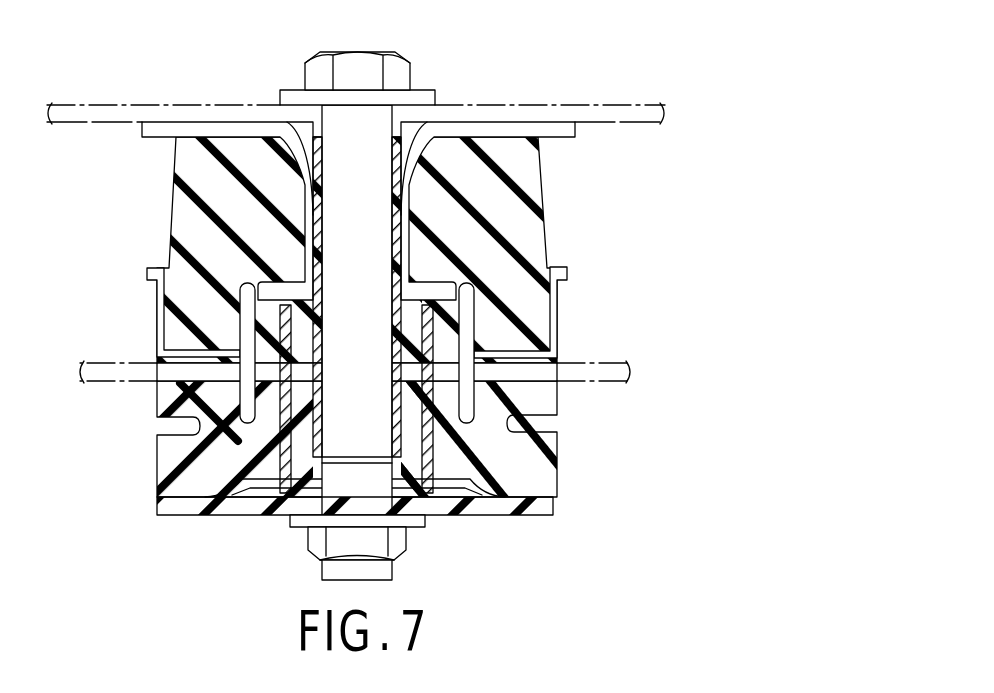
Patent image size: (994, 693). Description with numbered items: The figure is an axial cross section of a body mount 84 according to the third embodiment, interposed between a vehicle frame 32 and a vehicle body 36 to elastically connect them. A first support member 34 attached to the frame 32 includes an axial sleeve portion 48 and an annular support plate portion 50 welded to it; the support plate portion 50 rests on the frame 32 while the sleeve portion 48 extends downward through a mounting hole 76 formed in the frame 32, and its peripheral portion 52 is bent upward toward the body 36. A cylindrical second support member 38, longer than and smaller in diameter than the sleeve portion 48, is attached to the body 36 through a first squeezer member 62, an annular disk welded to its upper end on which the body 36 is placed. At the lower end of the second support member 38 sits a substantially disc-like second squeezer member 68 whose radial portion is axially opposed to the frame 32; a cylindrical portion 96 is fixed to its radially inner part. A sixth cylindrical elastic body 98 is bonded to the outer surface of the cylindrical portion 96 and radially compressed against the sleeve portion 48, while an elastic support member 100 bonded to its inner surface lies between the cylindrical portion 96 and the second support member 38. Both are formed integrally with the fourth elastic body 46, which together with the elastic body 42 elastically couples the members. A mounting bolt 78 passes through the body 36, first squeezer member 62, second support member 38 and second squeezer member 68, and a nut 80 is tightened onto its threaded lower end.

The frame 32 is at (578, 380).
The first support member 34 is at (560, 338).
The body 36 is at (100, 100).
The second support member 38 is at (318, 232).
The cylindrical elastic body 42 is at (215, 185).
The fourth cylindrical elastic body 46 is at (168, 397).
The sleeve portion 48 is at (242, 452).
The annular support plate portion 50 is at (507, 352).
The peripheral portion 52 is at (160, 332).
The first squeezer member 62 is at (208, 131).
The second squeezer member 68 is at (469, 528).
The mounting hole 76 is at (238, 380).
The mounting bolt 78 is at (398, 66).
The nut 80 is at (313, 540).
The body mount 84 is at (344, 185).
The cylindrical portion 96 is at (283, 470).
The sixth cylindrical elastic body 98 is at (445, 402).
The elastic support member 100 is at (408, 432).